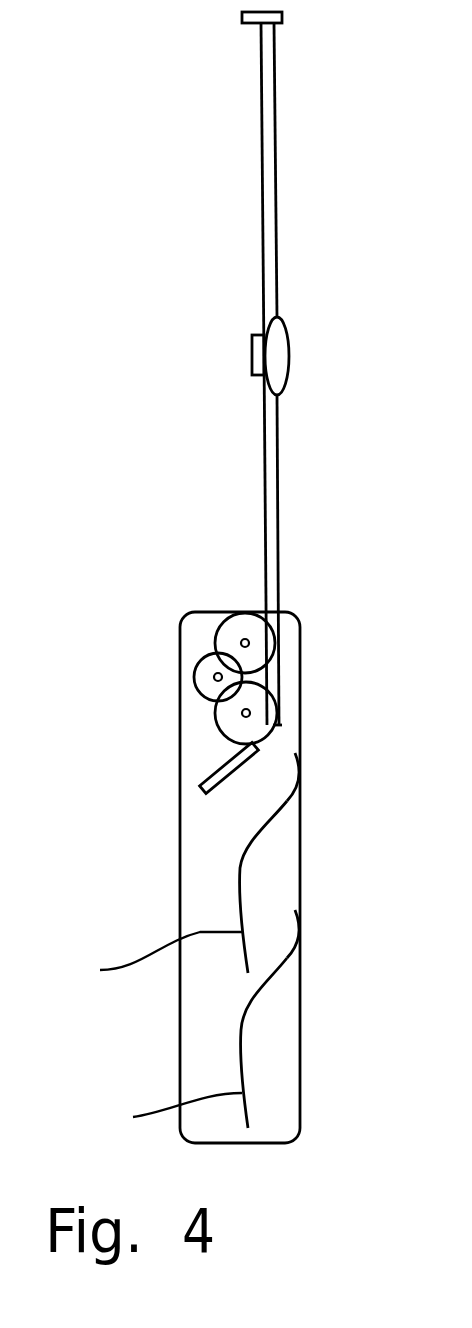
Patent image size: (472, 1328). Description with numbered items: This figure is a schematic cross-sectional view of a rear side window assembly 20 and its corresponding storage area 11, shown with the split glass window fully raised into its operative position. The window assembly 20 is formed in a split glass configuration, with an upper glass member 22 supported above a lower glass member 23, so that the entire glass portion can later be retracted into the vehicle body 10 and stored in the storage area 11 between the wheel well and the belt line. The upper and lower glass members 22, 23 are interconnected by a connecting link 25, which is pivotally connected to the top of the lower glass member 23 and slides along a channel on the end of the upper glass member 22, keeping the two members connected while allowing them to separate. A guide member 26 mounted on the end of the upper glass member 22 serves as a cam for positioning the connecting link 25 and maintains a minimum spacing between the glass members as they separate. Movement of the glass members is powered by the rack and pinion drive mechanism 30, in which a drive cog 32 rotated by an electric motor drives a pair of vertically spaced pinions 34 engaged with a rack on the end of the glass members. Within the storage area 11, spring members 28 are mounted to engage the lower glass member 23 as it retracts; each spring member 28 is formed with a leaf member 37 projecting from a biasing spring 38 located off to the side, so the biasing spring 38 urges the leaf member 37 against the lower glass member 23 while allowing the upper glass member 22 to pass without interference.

The vehicle body 10 is at (180, 886).
The storage area 11 is at (205, 1008).
The window assembly 20 is at (206, 228).
The upper glass member 22 is at (268, 152).
The lower glass member 23 is at (275, 497).
The connecting link 25 is at (289, 357).
The guide member 26 is at (253, 357).
The spring member 28 is at (242, 860).
The rack and pinion drive mechanism 30 is at (160, 636).
The drive cog 32 is at (195, 676).
The pinion 34 is at (217, 627).
The leaf member 37 is at (152, 1033).
The biasing spring 38 is at (283, 804).